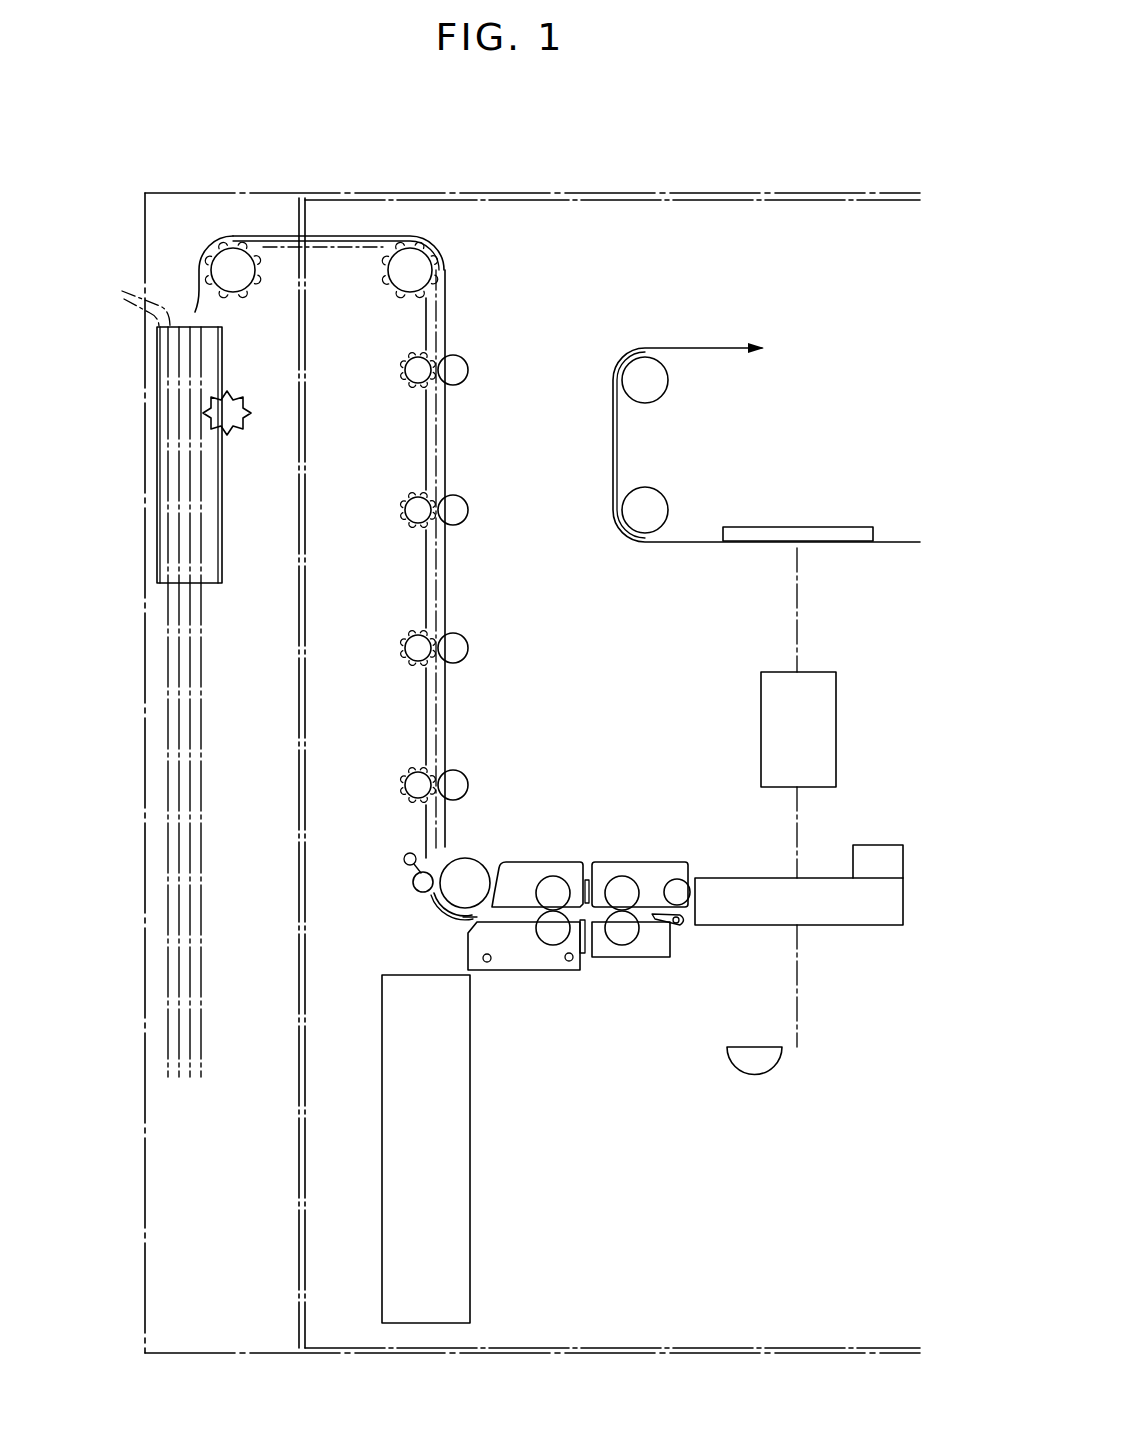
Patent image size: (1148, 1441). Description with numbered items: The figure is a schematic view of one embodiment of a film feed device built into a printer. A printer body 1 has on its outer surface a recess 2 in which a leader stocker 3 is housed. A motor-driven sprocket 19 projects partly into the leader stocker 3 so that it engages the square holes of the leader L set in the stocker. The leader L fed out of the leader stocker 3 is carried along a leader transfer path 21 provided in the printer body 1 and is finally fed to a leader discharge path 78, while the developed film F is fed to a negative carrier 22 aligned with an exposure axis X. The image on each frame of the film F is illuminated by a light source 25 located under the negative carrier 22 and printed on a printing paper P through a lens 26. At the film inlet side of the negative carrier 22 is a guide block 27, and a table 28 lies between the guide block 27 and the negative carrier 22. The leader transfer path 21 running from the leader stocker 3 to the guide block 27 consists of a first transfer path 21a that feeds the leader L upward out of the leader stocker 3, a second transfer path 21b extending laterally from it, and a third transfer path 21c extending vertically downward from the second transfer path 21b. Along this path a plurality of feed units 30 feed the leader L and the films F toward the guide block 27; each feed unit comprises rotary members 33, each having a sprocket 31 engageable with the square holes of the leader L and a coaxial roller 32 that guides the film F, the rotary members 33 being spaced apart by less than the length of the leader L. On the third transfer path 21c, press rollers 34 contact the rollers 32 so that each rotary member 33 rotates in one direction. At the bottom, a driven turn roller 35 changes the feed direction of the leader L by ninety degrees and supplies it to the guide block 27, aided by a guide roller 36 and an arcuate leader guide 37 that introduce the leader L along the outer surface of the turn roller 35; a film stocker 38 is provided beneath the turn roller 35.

The printer body 1 is at (362, 191).
The recess 2 is at (237, 207).
The leader stocker 3 is at (157, 352).
The sprocket 19 is at (240, 431).
The leader transfer path 21 is at (446, 297).
The first transfer path 21a is at (207, 288).
The second transfer path 21b is at (370, 239).
The third transfer path 21c is at (447, 436).
The negative carrier 22 is at (870, 910).
The light source 25 is at (790, 1058).
The lens 26 is at (761, 722).
The guide block 27 is at (530, 970).
The table 28 is at (645, 957).
The feed units 30 is at (446, 246).
The sprocket 31 is at (232, 255).
The roller 32 is at (222, 250).
The rotary members 33 is at (247, 300).
The press rollers 34 is at (461, 510).
The turn roller 35 is at (474, 866).
The guide roller 36 is at (422, 884).
The arcuate leader guide 37 is at (447, 918).
The film stocker 38 is at (471, 1177).
The leader discharge path 78 is at (668, 924).
The film F is at (179, 729).
The leader L is at (124, 300).
The printing paper P is at (882, 546).
The exposure axis X is at (797, 612).